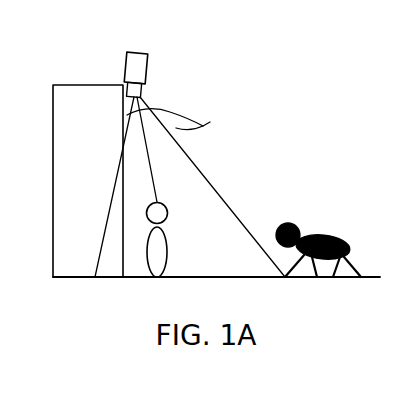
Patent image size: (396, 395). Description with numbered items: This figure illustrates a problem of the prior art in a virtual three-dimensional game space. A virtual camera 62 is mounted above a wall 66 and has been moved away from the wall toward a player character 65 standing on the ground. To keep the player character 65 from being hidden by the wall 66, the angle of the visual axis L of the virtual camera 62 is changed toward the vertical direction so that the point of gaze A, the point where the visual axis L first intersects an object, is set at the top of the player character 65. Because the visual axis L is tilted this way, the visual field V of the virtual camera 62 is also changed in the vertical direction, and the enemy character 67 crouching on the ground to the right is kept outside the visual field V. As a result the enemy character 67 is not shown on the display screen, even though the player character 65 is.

The wall 66 is at (78, 94).
The virtual camera 62 is at (140, 68).
The visual field V is at (174, 120).
The visual axis L is at (151, 162).
The point of gaze A is at (157, 203).
The player character 65 is at (161, 247).
The enemy character 67 is at (327, 234).